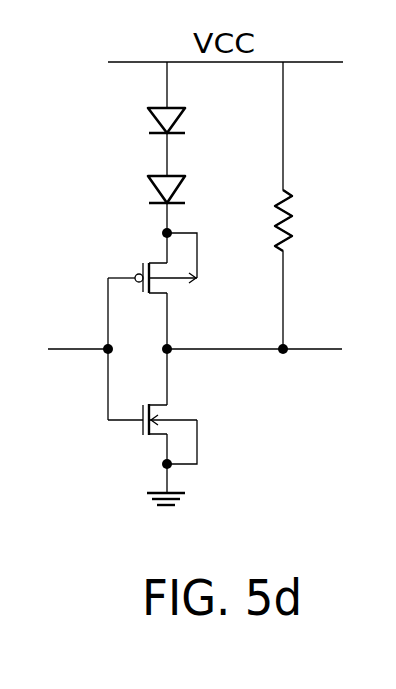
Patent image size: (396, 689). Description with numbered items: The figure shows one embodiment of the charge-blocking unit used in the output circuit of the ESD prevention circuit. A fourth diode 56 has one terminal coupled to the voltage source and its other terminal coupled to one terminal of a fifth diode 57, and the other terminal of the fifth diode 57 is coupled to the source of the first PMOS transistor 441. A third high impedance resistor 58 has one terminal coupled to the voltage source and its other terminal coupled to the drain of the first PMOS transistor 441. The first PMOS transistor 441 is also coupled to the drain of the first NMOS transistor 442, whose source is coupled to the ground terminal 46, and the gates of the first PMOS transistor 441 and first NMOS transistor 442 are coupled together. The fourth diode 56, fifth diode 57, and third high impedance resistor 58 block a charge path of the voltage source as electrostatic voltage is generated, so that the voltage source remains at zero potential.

The fourth diode 56 is at (176, 107).
The fifth diode 57 is at (175, 175).
The third high impedance resistor 58 is at (292, 225).
The first PMOS transistor 441 is at (158, 262).
The first NMOS transistor 442 is at (154, 437).
The ground terminal 46 is at (160, 507).